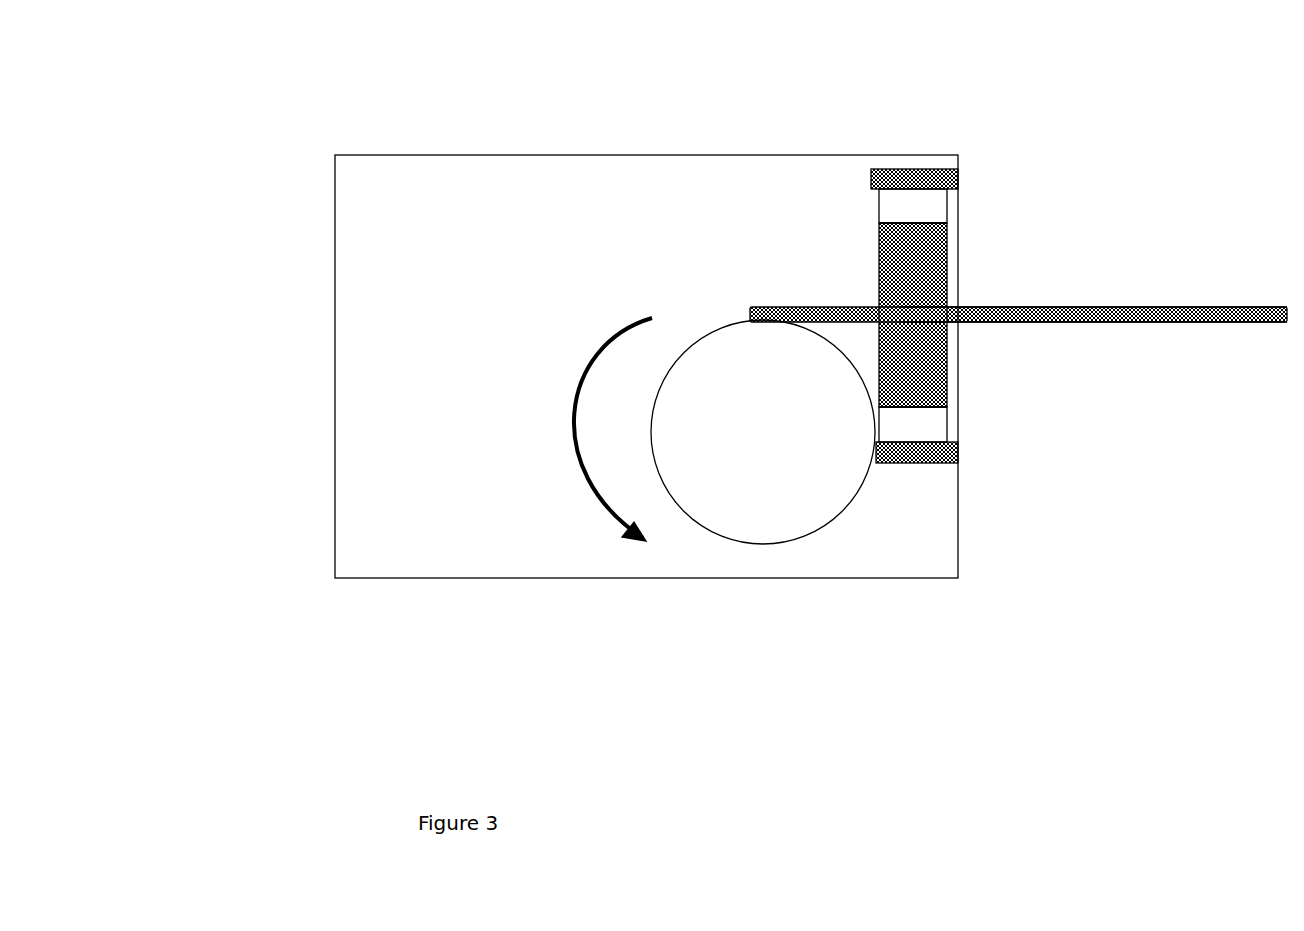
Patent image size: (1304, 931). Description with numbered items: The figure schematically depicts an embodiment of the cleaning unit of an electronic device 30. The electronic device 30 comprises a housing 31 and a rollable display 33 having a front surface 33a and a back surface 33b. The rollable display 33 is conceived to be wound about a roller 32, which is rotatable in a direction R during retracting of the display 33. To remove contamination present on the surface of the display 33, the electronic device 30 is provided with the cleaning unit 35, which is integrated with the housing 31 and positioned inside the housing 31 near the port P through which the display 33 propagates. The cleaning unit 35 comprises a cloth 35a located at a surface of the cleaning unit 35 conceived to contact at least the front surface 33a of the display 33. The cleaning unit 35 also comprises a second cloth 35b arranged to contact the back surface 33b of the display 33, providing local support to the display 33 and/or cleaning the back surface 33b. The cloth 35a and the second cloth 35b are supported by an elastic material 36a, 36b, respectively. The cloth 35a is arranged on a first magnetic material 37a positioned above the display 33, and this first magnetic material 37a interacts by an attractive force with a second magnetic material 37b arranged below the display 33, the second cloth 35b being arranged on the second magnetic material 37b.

The electronic device 30 is at (292, 98).
The housing 31 is at (525, 155).
The roller 32 is at (712, 330).
The rollable display 33 is at (1160, 312).
The front surface 33a is at (1022, 307).
The back surface 33b is at (1110, 322).
The cleaning unit 35 is at (878, 255).
The cloth 35a is at (935, 268).
The second cloth 35b is at (938, 373).
The elastic material 36a is at (925, 200).
The elastic material 36b is at (957, 462).
The first magnetic material 37a is at (910, 178).
The second magnetic material 37b is at (895, 453).
The port P is at (958, 305).
The direction R is at (568, 438).